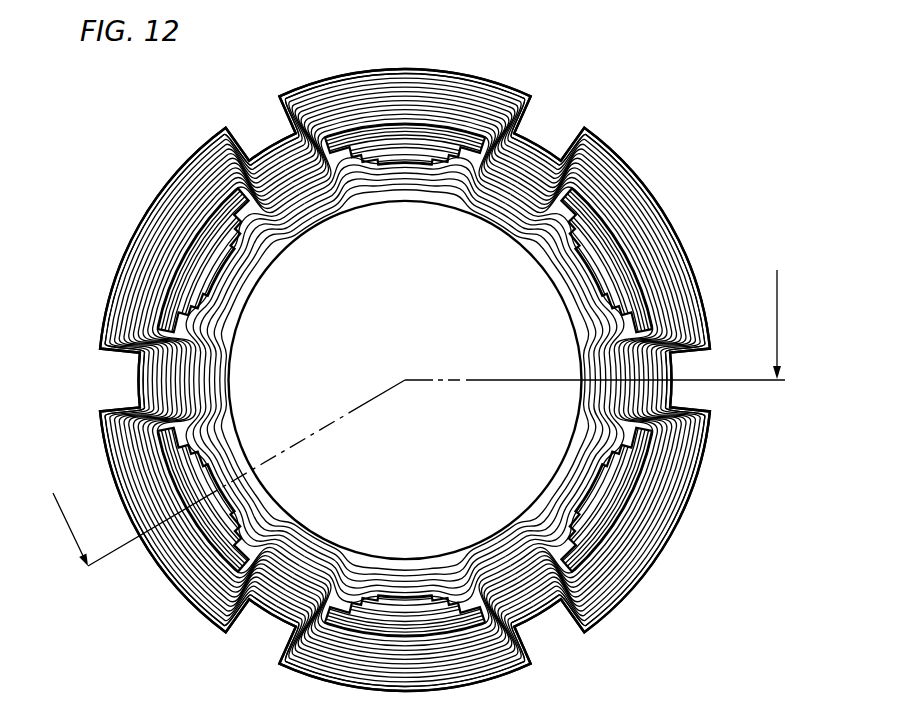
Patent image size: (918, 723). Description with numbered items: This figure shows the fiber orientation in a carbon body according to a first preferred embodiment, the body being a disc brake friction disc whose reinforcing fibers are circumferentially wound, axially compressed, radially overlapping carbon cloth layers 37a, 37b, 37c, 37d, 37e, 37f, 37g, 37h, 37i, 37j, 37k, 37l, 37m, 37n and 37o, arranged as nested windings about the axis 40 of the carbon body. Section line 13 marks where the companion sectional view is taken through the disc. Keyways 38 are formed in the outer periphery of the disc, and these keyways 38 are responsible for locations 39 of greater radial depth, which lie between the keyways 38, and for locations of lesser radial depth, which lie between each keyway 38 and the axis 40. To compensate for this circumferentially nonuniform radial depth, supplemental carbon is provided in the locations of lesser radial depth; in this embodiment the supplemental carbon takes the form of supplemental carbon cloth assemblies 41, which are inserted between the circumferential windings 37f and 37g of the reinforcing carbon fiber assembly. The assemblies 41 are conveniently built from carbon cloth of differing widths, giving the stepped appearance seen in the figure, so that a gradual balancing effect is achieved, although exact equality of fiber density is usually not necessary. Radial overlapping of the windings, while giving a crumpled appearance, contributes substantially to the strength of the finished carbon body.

The section line 13 is at (412, 401).
The reinforcing carbon cloth layer 37a is at (578, 352).
The reinforcing carbon cloth layer 37b is at (586, 381).
The reinforcing carbon cloth layer 37c is at (595, 406).
The reinforcing carbon cloth layer 37d is at (597, 436).
The reinforcing carbon cloth layer 37e is at (583, 468).
The reinforcing carbon cloth layer 37f is at (582, 493).
The reinforcing carbon cloth layer 37g is at (649, 437).
The reinforcing carbon cloth layer 37h is at (651, 452).
The reinforcing carbon cloth layer 37i is at (649, 467).
The reinforcing carbon cloth layer 37j is at (647, 483).
The reinforcing carbon cloth layer 37k is at (645, 507).
The reinforcing carbon cloth layer 37l is at (643, 523).
The reinforcing carbon cloth layer 37m is at (640, 543).
The reinforcing carbon cloth layer 37n is at (623, 568).
The reinforcing carbon cloth layer 37o is at (623, 597).
The keyway 38 is at (690, 351).
The location of greater radial depth 39 is at (600, 610).
The axis 40 is at (398, 371).
The supplemental carbon cloth assembly 41 is at (575, 498).